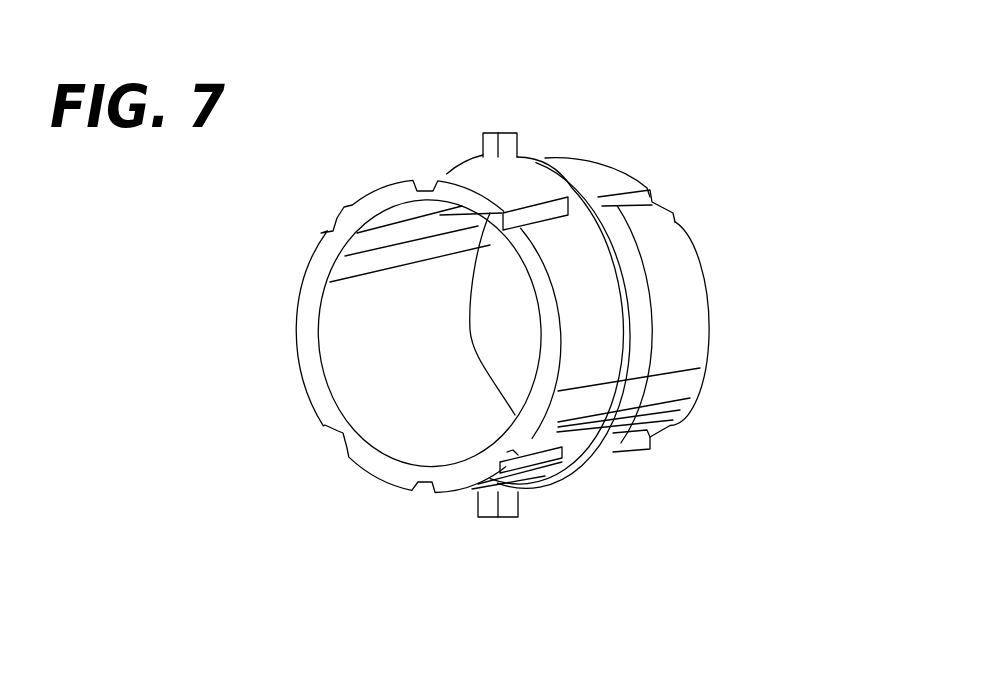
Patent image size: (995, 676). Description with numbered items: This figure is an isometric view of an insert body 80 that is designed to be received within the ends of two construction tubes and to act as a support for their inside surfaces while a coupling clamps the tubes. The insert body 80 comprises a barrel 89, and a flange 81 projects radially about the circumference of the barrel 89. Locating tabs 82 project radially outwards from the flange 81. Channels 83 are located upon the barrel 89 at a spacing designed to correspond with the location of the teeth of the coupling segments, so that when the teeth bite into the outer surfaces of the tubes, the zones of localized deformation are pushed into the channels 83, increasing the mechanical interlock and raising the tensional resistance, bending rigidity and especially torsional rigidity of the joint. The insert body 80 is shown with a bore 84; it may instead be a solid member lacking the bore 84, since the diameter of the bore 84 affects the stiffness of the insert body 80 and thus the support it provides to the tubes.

The insert body 80 is at (762, 197).
The flange 81 is at (562, 174).
The locating tabs 82 is at (503, 132).
The channels 83 is at (417, 183).
The bore 84 is at (528, 353).
The barrel 89 is at (690, 335).